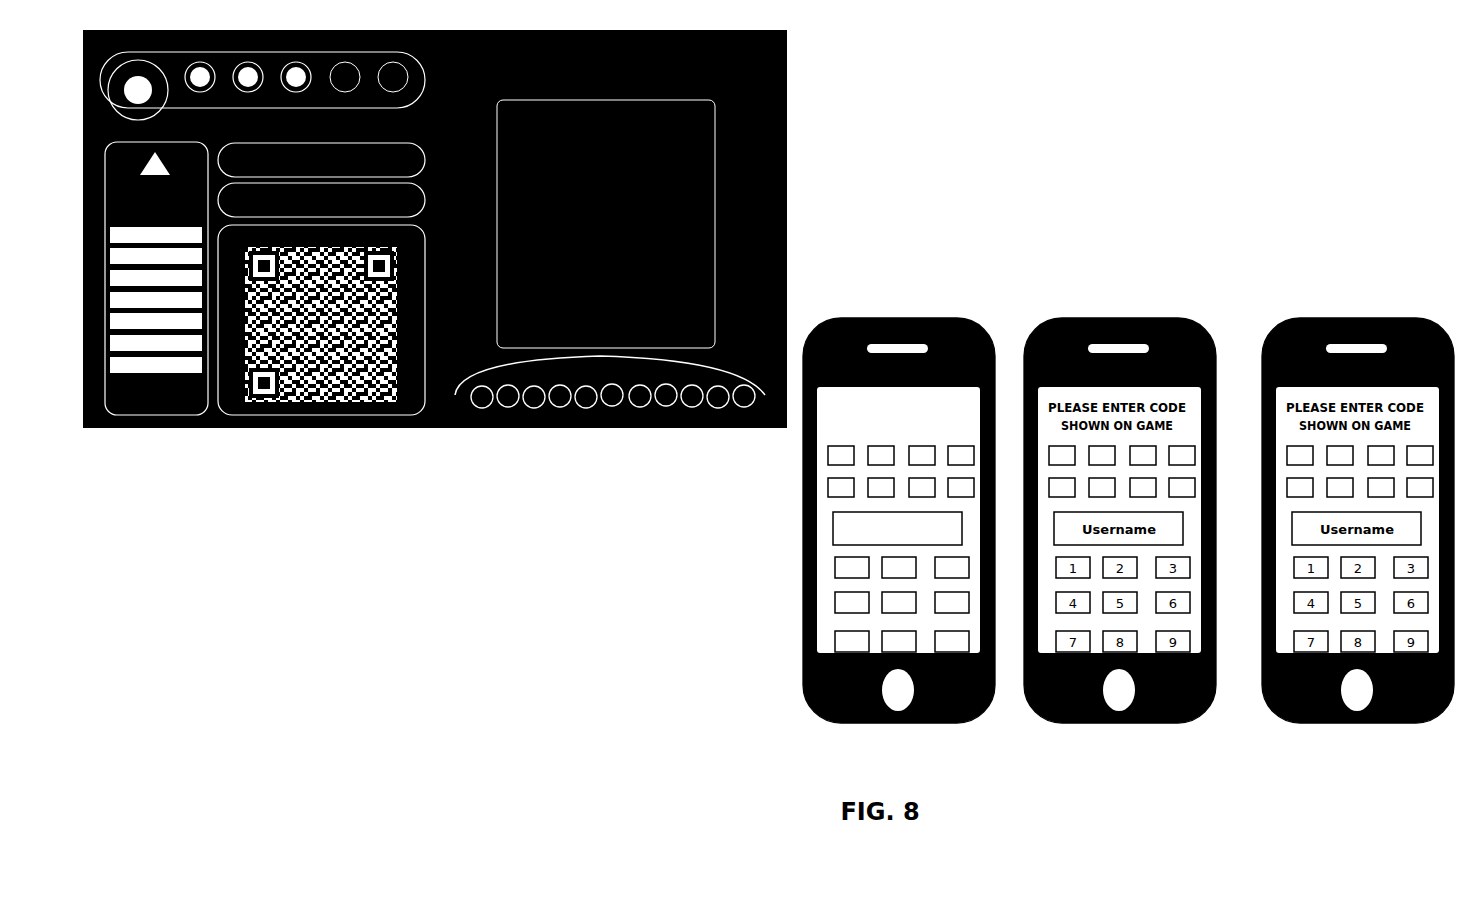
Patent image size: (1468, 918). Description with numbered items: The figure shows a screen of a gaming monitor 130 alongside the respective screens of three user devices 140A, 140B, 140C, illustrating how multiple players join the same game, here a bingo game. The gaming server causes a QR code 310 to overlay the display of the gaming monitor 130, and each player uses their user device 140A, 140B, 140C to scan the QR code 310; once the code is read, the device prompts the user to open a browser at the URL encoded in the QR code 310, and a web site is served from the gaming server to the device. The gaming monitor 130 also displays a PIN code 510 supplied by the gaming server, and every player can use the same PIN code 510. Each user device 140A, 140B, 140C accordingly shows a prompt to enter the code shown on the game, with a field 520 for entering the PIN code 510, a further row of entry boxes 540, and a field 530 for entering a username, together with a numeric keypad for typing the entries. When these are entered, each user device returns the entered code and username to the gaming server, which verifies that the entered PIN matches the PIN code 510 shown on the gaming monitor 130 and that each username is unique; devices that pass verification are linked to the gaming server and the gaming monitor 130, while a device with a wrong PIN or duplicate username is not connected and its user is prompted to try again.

The gaming monitor 130 is at (215, 428).
The PIN code 510 is at (328, 428).
The QR code 310 is at (463, 428).
The user device 140A is at (903, 318).
The user device 140B is at (1115, 318).
The user device 140C is at (1357, 318).
The field for entering the PIN code 520 is at (838, 454).
The second code entry fields 540 is at (836, 487).
The field for entering a username 530 is at (833, 529).